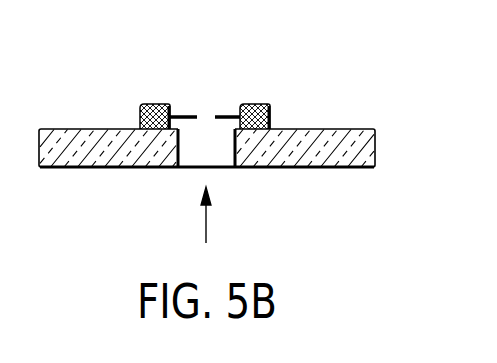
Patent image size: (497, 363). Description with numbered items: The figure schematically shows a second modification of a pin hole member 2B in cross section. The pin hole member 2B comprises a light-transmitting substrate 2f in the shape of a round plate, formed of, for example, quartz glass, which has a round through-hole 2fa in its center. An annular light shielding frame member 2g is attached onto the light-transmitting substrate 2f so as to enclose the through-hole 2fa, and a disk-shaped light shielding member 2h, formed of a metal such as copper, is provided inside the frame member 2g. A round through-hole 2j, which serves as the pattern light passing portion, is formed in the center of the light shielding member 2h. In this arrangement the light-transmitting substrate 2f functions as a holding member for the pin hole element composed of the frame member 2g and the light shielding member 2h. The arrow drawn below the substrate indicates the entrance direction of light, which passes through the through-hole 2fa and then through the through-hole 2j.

The pin hole member 2B is at (92, 122).
The light-transmitting substrate 2f is at (336, 133).
The through-hole 2fa is at (228, 150).
The light shielding frame member 2g is at (148, 103).
The light shielding member 2h is at (182, 113).
The through-hole 2j is at (203, 113).